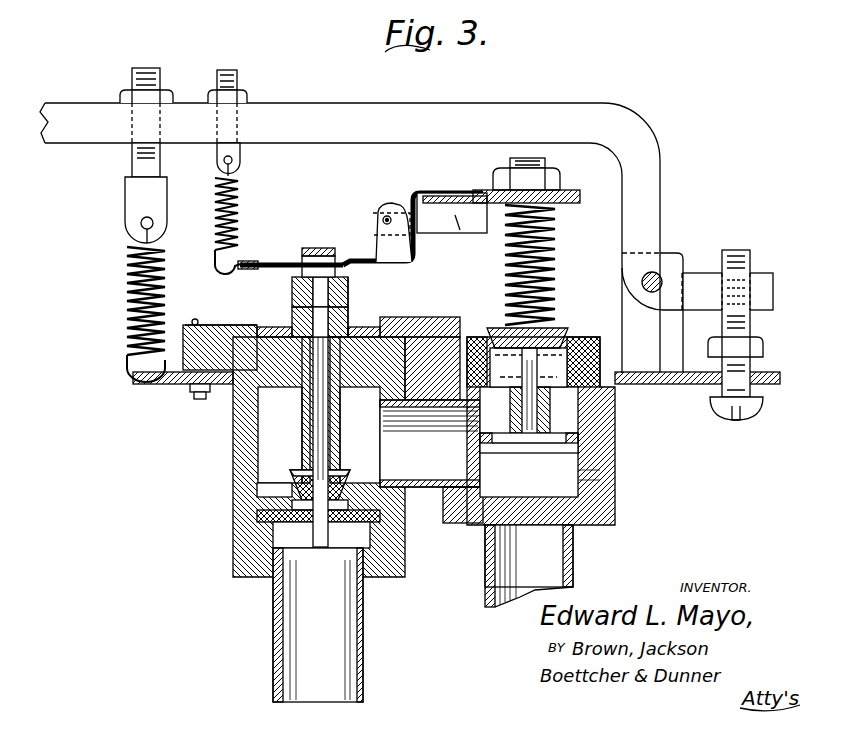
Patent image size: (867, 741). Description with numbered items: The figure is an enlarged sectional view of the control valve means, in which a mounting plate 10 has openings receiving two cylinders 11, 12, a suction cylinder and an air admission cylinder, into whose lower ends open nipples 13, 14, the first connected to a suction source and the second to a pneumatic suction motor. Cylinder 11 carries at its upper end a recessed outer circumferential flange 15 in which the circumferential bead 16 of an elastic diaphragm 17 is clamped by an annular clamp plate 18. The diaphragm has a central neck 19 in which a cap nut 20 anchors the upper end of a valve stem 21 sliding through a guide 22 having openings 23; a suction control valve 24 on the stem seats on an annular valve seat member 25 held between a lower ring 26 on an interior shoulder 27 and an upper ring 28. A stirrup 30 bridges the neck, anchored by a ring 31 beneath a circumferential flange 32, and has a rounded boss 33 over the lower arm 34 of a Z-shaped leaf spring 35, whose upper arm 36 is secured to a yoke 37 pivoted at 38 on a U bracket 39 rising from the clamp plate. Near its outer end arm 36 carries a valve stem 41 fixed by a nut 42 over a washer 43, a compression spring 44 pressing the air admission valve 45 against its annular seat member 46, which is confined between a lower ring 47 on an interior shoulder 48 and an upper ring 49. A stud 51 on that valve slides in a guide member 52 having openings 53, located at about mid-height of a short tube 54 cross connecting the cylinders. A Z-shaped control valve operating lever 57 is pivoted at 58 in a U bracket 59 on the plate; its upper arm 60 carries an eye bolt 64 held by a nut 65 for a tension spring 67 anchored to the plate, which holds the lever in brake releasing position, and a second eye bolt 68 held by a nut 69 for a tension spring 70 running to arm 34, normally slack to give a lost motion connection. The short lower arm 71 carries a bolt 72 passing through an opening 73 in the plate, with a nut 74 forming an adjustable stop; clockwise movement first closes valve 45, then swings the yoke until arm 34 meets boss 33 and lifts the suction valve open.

The mounting plate 10 is at (180, 386).
The cylinder 11 is at (235, 440).
The cylinder 12 is at (614, 460).
The nipple 13 is at (275, 640).
The nipple 14 is at (574, 560).
The outer circumferential flange 15 is at (183, 340).
The circumferential bead 16 is at (216, 384).
The elastic diaphragm 17 is at (278, 335).
The annular clamp plate 18 is at (220, 326).
The neck 19 is at (350, 318).
The cap nut 20 is at (292, 288).
The valve stem 21 is at (314, 445).
The guide 22 is at (300, 420).
The openings 23 is at (352, 390).
The suction control valve 24 is at (345, 478).
The annular valve seat member 25 is at (262, 512).
The lower ring 26 is at (265, 525).
The interior shoulder 27 is at (270, 548).
The upper ring 28 is at (257, 489).
The stirrup 30 is at (302, 262).
The ring 31 is at (352, 300).
The circumferential flange 32 is at (288, 262).
The rounded boss 33 is at (316, 248).
The lower arm 34 is at (348, 258).
The leaf spring 35 is at (413, 192).
The upper arm 36 is at (455, 194).
The yoke 37 is at (457, 230).
The pivot 38 is at (382, 220).
The U bracket 39 is at (415, 318).
The valve stem 41 is at (545, 158).
The nut 42 is at (498, 170).
The washer 43 is at (565, 203).
The compression spring 44 is at (558, 246).
The air admission valve 45 is at (570, 330).
The annular seat member 46 is at (600, 352).
The lower ring 47 is at (590, 470).
The interior shoulder 48 is at (612, 440).
The upper ring 49 is at (595, 340).
The stud 51 is at (512, 403).
The guide member 52 is at (522, 420).
The openings 53 is at (555, 440).
The short tube 54 is at (430, 503).
The control valve operating lever 57 is at (448, 102).
The pivot 58 is at (660, 275).
The U bracket 59 is at (622, 300).
The upper arm 60 is at (290, 104).
The eye bolt 64 is at (131, 170).
The nut 65 is at (120, 96).
The tension spring 67 is at (125, 288).
The second eye bolt 68 is at (240, 162).
The nut 69 is at (242, 92).
The tension spring 70 is at (240, 197).
The lower arm 71 is at (768, 282).
The bolt 72 is at (738, 252).
The opening 73 is at (712, 400).
The nut 74 is at (760, 346).